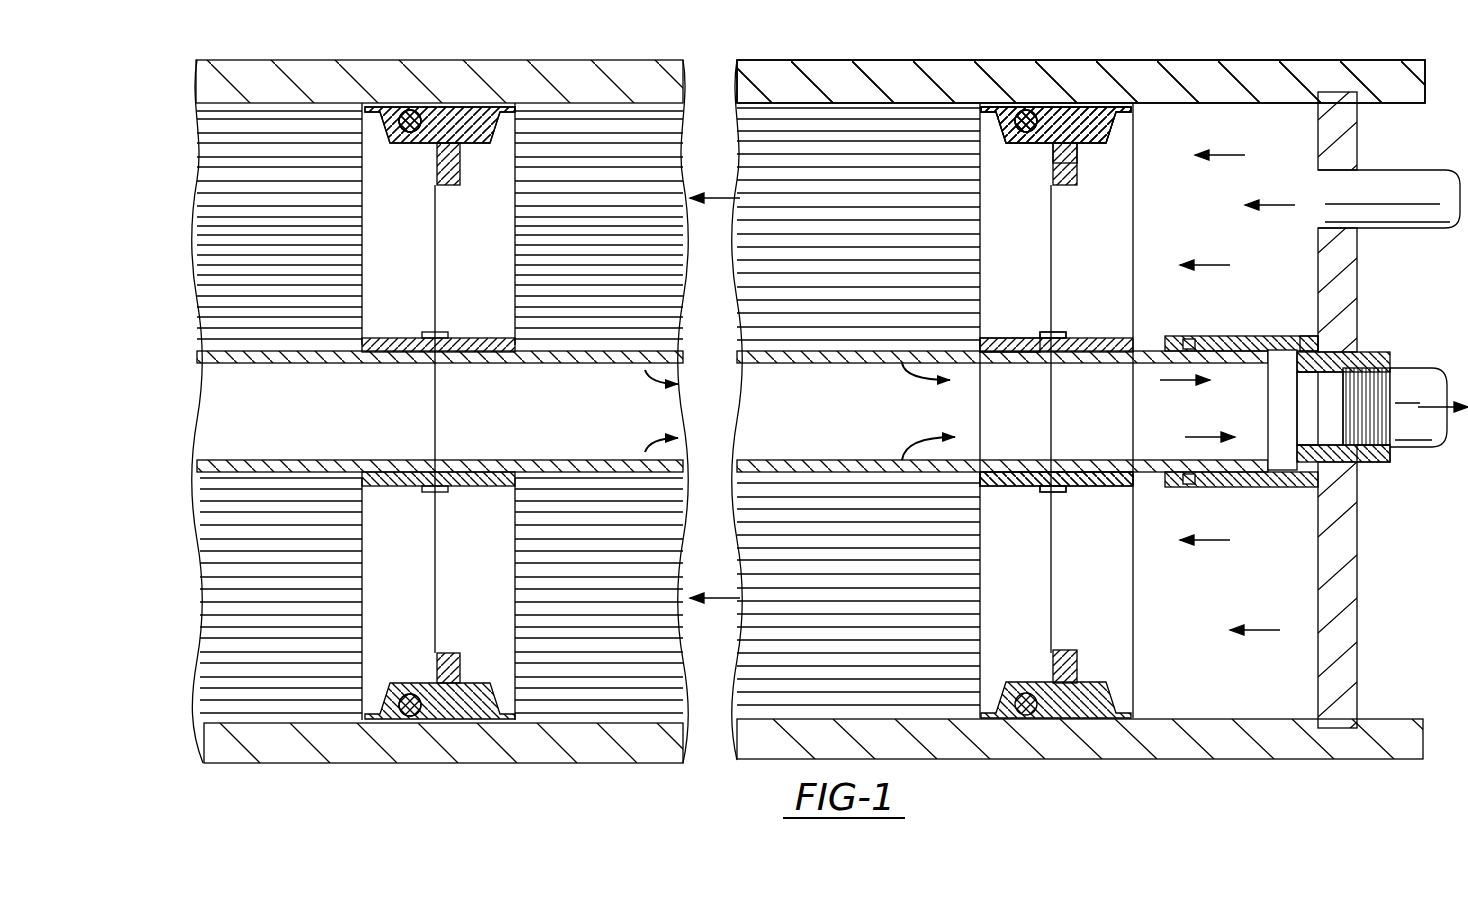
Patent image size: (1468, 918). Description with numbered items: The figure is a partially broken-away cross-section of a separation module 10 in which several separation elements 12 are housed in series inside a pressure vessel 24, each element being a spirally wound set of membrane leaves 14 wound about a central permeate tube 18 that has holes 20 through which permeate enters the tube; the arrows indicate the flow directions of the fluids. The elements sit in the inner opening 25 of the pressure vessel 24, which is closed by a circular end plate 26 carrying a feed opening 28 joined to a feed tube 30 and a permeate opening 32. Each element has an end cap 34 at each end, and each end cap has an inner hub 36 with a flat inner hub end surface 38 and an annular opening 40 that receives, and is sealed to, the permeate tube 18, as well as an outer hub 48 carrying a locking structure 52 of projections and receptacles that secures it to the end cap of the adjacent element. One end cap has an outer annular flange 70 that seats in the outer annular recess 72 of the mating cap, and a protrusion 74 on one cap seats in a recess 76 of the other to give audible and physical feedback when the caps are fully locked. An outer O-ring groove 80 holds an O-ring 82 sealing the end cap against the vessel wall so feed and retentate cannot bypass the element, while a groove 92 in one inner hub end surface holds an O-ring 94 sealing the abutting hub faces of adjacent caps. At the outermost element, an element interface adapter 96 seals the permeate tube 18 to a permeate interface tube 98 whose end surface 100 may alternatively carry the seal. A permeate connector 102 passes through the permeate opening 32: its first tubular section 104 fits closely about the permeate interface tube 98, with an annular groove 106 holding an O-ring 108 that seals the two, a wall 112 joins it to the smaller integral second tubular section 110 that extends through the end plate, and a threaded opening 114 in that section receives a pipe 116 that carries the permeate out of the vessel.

The separation module 10 is at (892, 60).
The separation element 12 is at (808, 100).
The membrane leaf 14 is at (745, 690).
The permeate tube 18 is at (195, 352).
The holes 20 is at (275, 465).
The pressure vessel 24 is at (662, 80).
The inner opening 25 is at (1285, 98).
The end plate 26 is at (1348, 665).
The feed opening 28 is at (1362, 178).
The feed tube 30 is at (1415, 210).
The permeate opening 32 is at (1372, 465).
The end cap 34 is at (385, 108).
The inner hub 36 is at (410, 336).
The inner hub end surface 38 is at (1055, 488).
The annular opening 40 is at (478, 365).
The outer hub 48 is at (508, 108).
The locking structure 52 is at (468, 160).
The outer annular flange 70 is at (1056, 78).
The outer annular recess 72 is at (1056, 71).
The protrusion 74 is at (1070, 170).
The recess 76 is at (1078, 150).
The outer O-ring groove 80 is at (418, 110).
The O-ring 82 is at (407, 719).
The groove 92 is at (1030, 340).
The O-ring 94 is at (1045, 345).
The element interface adapter 96 is at (1160, 492).
The permeate interface tube 98 is at (1175, 340).
The end surface 100 is at (1060, 465).
The permeate connector 102 is at (1378, 354).
The first tubular section 104 is at (1278, 488).
The annular groove 106 is at (1192, 342).
The O-ring 108 is at (1190, 482).
The second tubular section 110 is at (1356, 468).
The wall 112 is at (1280, 350).
The threaded opening 114 is at (1393, 392).
The pipe 116 is at (1415, 432).